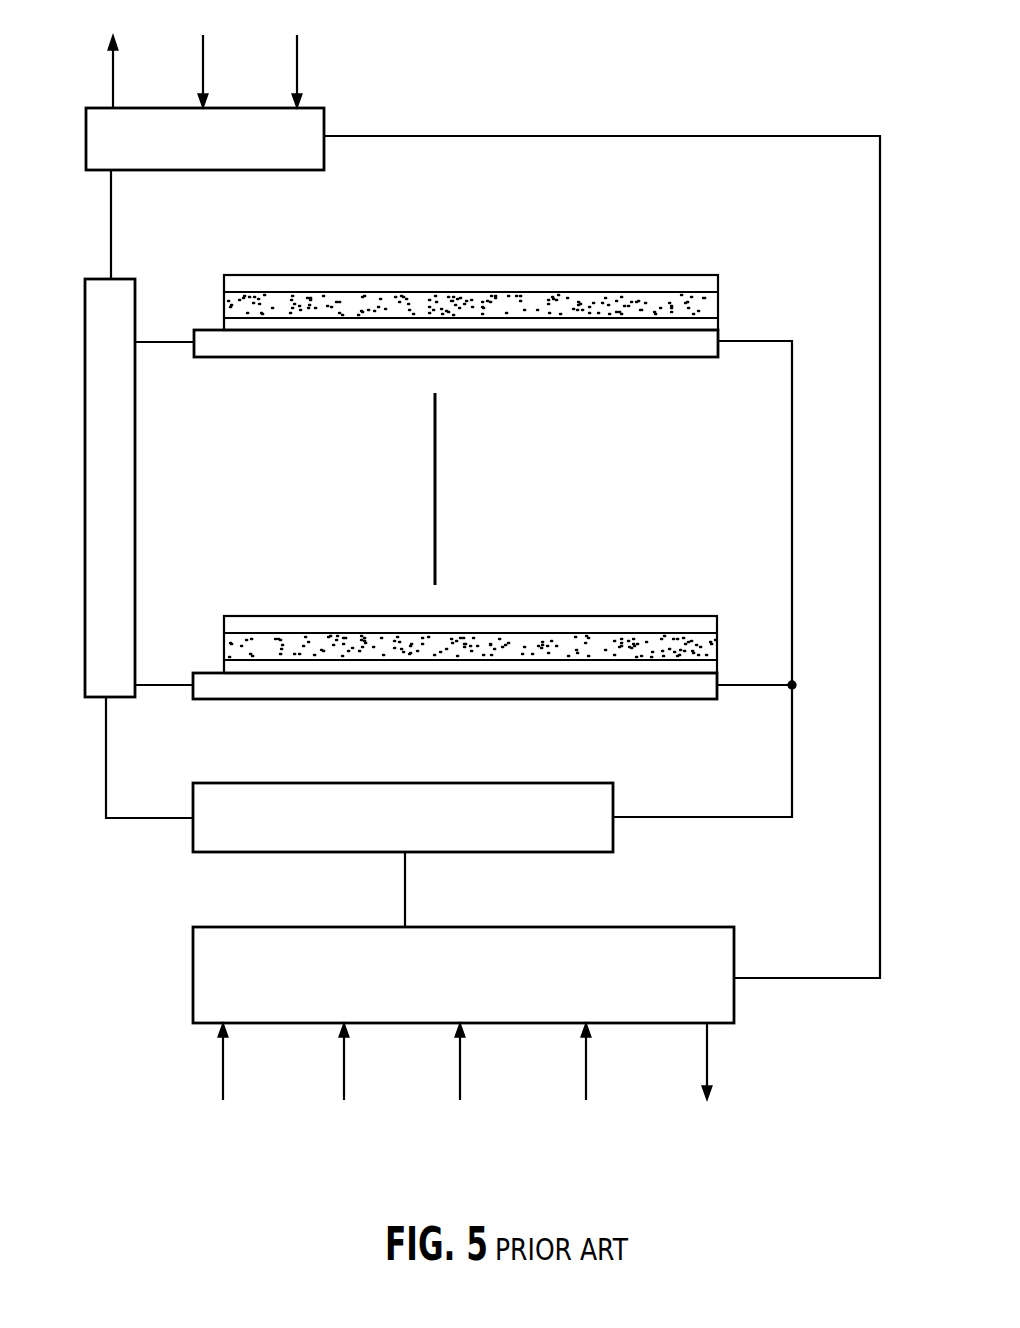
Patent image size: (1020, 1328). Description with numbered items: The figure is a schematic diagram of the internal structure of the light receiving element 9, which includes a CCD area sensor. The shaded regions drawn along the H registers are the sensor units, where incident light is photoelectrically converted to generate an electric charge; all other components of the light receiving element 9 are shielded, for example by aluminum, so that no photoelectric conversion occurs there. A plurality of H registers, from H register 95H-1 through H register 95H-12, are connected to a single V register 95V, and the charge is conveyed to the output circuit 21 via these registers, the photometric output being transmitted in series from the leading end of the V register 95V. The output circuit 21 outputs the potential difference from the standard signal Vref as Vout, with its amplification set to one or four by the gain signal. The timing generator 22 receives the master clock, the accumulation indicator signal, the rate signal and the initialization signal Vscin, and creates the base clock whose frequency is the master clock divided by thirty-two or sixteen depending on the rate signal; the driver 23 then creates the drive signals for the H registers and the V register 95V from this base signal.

The light receiving element 9 is at (723, 153).
The output circuit 21 is at (297, 118).
The timing generator 22 is at (679, 938).
The driver 23 is at (607, 800).
The V register 95V is at (85, 473).
The H register 95H-1 is at (456, 341).
The H register 95H-12 is at (455, 686).